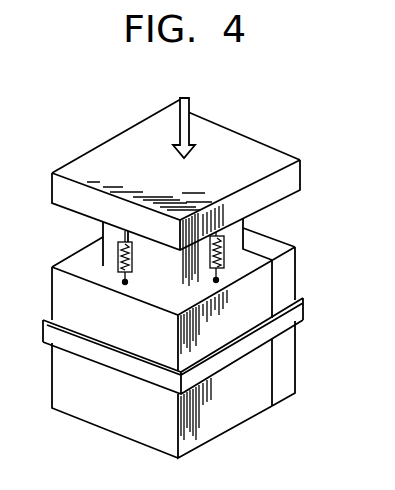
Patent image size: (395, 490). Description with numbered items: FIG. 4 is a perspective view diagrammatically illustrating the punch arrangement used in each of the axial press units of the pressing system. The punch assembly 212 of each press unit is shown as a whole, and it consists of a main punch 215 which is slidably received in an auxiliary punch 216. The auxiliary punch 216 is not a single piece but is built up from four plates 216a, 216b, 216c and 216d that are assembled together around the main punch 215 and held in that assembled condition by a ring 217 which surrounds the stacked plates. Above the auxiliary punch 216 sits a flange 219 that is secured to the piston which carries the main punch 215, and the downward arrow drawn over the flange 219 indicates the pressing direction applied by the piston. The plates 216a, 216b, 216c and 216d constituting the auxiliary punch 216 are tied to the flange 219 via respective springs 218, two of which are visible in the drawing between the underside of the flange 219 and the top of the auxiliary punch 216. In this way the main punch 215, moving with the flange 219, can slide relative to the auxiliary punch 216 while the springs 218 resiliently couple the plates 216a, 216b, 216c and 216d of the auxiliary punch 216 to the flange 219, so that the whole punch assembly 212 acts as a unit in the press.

The punch assembly 212 is at (307, 154).
The main punch 215 is at (157, 274).
The auxiliary punch 216 is at (262, 296).
The plate 216a is at (110, 422).
The plate 216b is at (233, 415).
The plate 216c is at (287, 367).
The plate 216d is at (97, 250).
The ring 217 is at (288, 323).
The spring 218 is at (112, 266).
The flange 219 is at (100, 147).